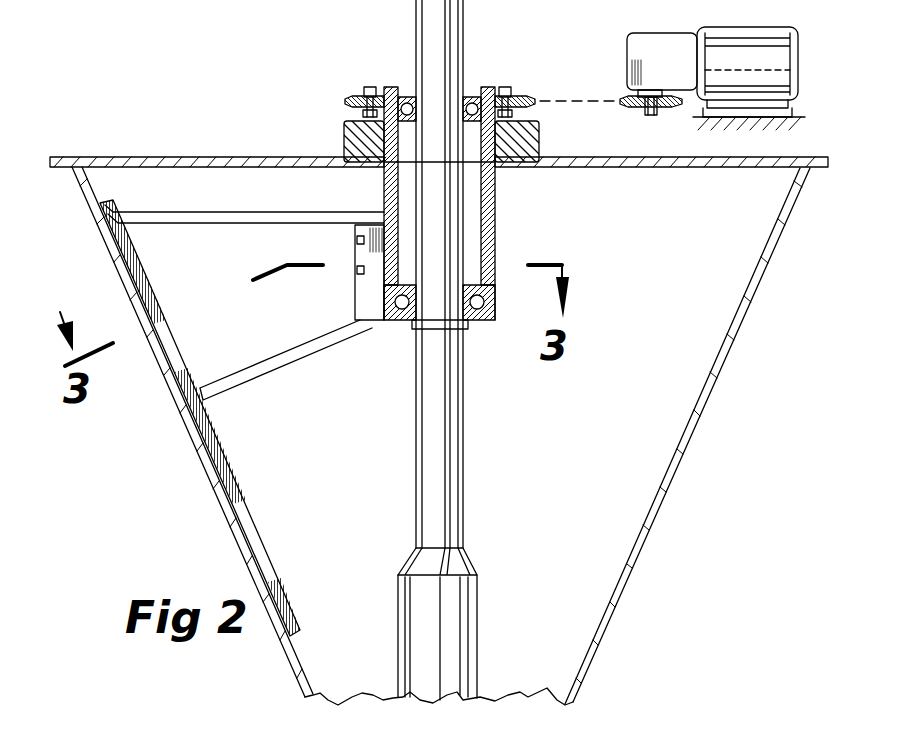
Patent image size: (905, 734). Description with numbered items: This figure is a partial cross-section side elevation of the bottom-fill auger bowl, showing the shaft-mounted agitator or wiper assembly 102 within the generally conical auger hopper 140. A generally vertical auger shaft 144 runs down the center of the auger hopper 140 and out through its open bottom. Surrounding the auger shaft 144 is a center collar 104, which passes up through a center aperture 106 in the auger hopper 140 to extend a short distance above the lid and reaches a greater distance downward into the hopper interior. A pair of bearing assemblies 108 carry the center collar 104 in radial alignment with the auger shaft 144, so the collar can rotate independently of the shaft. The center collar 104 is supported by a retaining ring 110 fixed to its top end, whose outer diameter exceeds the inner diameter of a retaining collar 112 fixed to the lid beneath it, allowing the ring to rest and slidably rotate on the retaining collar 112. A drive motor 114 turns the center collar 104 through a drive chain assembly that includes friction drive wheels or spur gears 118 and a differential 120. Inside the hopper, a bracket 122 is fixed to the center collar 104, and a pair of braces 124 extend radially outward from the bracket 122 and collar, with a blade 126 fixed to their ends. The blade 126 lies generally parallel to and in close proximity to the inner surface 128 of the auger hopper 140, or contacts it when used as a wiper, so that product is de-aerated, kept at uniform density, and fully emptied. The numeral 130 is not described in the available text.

The agitator or wiper assembly 102 is at (262, 412).
The center collar 104 is at (497, 238).
The center aperture 106 is at (515, 168).
The bearing assemblies 108 is at (470, 96).
The retaining ring 110 is at (345, 112).
The retaining collar 112 is at (344, 137).
The drive motor 114 is at (785, 55).
The friction drive wheels or spur gears 118 is at (518, 97).
The differential 120 is at (653, 42).
The bracket 122 is at (355, 292).
The braces 124 is at (226, 224).
The blade 126 is at (263, 541).
The inner surface 128 is at (623, 567).
The top plate 130 is at (785, 157).
The auger hopper 140 is at (635, 568).
The auger shaft 144 is at (464, 413).